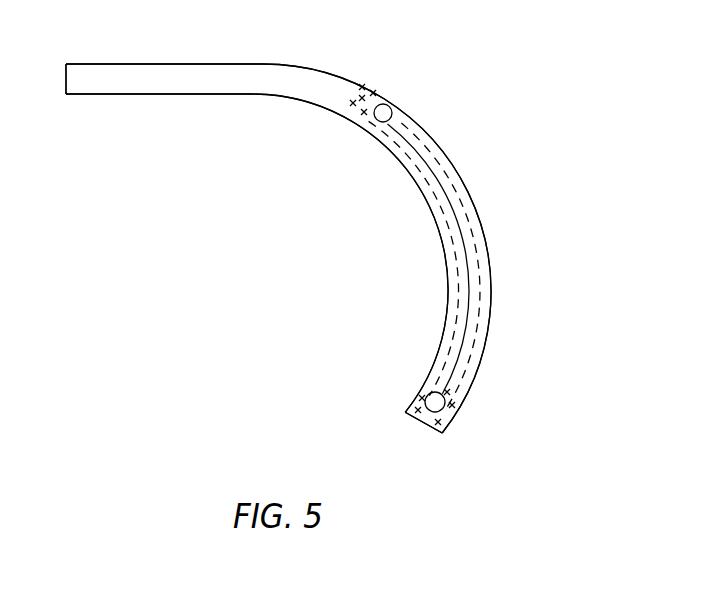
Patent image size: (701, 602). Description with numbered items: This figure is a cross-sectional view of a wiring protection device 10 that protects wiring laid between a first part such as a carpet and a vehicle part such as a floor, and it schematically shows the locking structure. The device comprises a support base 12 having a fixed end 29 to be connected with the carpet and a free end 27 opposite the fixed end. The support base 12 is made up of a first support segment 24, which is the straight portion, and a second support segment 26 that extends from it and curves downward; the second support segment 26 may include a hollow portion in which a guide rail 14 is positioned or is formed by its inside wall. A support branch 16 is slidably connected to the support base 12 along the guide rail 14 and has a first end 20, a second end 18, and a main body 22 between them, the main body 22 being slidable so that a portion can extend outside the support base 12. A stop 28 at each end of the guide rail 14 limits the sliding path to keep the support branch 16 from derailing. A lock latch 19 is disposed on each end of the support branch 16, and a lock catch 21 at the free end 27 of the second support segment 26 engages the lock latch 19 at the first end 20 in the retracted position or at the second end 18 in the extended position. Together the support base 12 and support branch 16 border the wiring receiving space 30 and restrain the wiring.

The wiring protection device 10 is at (458, 50).
The support base 12 is at (310, 103).
The guide rail 14 is at (450, 202).
The support branch 16 is at (407, 178).
The second end 18 is at (373, 92).
The lock latch 19 is at (365, 82).
The first end 20 is at (457, 382).
The lock catch 21 is at (408, 403).
The main body 22 is at (447, 229).
The first support segment 24 is at (168, 84).
The second support segment 26 is at (441, 147).
The free end 27 is at (445, 433).
The stop 28 is at (393, 113).
The fixed end 29 is at (87, 70).
The wiring receiving space 30 is at (259, 290).